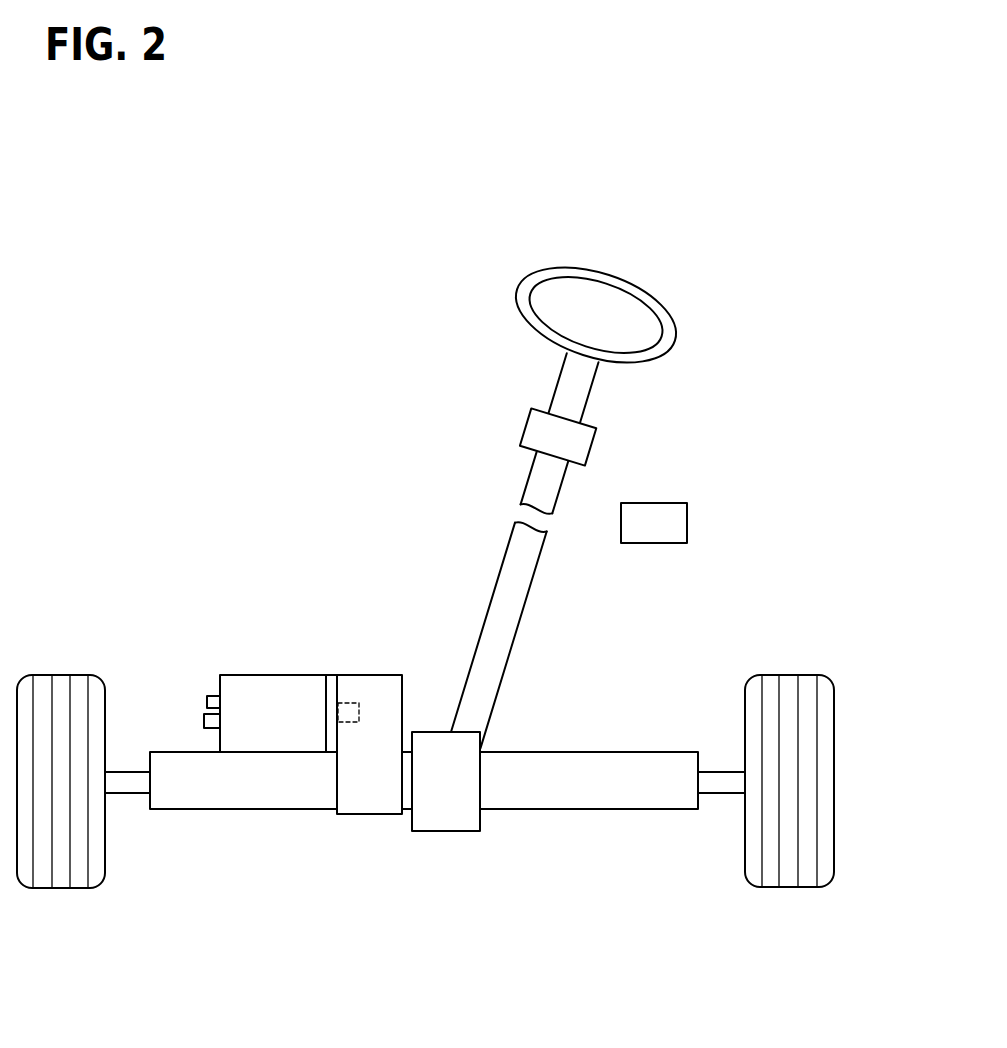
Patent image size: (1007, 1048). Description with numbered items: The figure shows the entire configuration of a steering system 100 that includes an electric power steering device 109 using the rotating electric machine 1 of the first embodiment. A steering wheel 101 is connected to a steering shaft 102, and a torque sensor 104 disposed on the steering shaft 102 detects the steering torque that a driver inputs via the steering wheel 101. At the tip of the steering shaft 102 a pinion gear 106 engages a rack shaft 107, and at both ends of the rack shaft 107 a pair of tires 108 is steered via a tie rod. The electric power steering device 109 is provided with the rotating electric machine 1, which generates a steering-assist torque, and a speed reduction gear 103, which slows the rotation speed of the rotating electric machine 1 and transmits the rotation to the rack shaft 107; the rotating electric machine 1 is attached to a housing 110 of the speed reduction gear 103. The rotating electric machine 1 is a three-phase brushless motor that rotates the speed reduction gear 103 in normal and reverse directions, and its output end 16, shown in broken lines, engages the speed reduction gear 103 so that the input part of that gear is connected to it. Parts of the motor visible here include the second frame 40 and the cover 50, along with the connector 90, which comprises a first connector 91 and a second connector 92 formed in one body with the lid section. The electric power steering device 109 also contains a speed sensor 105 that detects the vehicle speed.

The rotating electric machine 1 is at (280, 662).
The output end 16 is at (350, 703).
The second frame 40 is at (330, 680).
The cover 50 is at (240, 682).
The connector 90 is at (175, 709).
The first connector 91 is at (194, 700).
The second connector 92 is at (207, 700).
The steering system 100 is at (250, 428).
The steering wheel 101 is at (607, 272).
The steering shaft 102 is at (496, 668).
The speed reduction gear 103 is at (374, 744).
The torque sensor 104 is at (590, 443).
The speed sensor 105 is at (688, 520).
The pinion gear 106 is at (446, 831).
The rack shaft 107 is at (528, 809).
The tires 108 is at (60, 675).
The electric power steering device 109 is at (387, 342).
The housing 110 is at (391, 680).